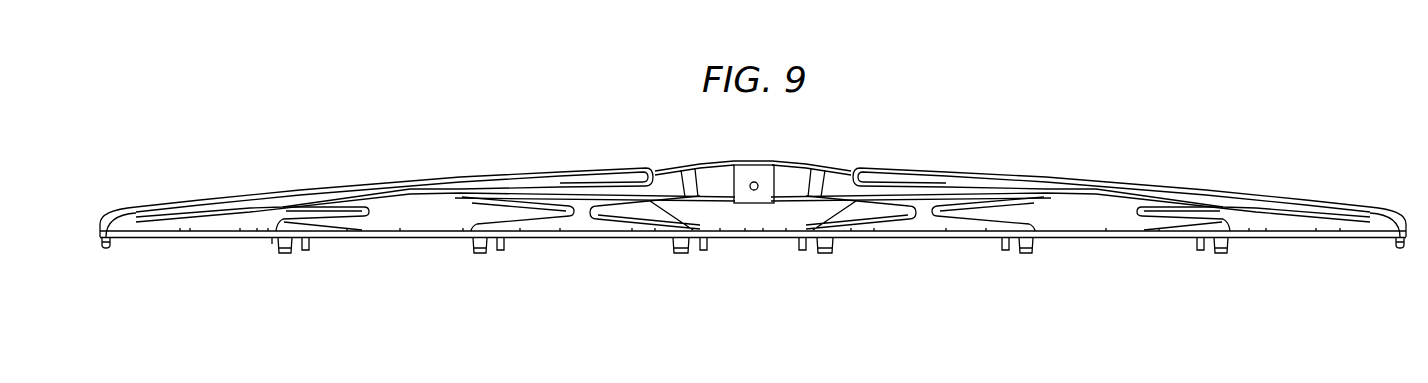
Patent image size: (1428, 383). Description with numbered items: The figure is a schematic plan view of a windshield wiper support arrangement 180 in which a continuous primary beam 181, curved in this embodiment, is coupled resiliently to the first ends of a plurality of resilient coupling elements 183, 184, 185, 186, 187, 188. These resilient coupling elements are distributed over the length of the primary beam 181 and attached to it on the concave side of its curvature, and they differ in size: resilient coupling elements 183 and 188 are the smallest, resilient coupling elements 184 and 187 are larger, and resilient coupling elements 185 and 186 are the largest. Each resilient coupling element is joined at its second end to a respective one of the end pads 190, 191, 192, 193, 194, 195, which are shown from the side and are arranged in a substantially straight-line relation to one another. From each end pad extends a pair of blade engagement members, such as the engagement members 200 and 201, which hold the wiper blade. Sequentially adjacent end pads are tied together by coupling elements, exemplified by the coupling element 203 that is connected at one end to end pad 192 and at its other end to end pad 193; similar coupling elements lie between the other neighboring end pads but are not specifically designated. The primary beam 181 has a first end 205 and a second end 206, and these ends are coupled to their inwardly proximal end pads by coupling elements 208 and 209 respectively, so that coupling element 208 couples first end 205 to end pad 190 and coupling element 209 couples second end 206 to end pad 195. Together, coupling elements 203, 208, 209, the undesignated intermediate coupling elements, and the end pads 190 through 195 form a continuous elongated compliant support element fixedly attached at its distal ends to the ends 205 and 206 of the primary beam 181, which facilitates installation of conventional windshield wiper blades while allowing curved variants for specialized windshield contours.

The windshield wiper support arrangement 180 is at (818, 349).
The primary beam 181 is at (512, 169).
The resilient coupling element 183 is at (368, 240).
The resilient coupling element 184 is at (547, 240).
The resilient coupling element 185 is at (608, 240).
The resilient coupling element 186 is at (893, 240).
The resilient coupling element 187 is at (943, 240).
The resilient coupling element 188 is at (1147, 240).
The end pad 190 is at (272, 241).
The end pad 191 is at (463, 241).
The end pad 192 is at (657, 240).
The end pad 193 is at (850, 240).
The end pad 194 is at (988, 240).
The end pad 195 is at (1238, 240).
The blade engagement member 200 is at (284, 256).
The blade engagement member 201 is at (304, 251).
The coupling element 203 is at (755, 240).
The first end 205 is at (115, 212).
The second end 206 is at (1380, 214).
The coupling element 208 is at (187, 240).
The coupling element 209 is at (1335, 240).